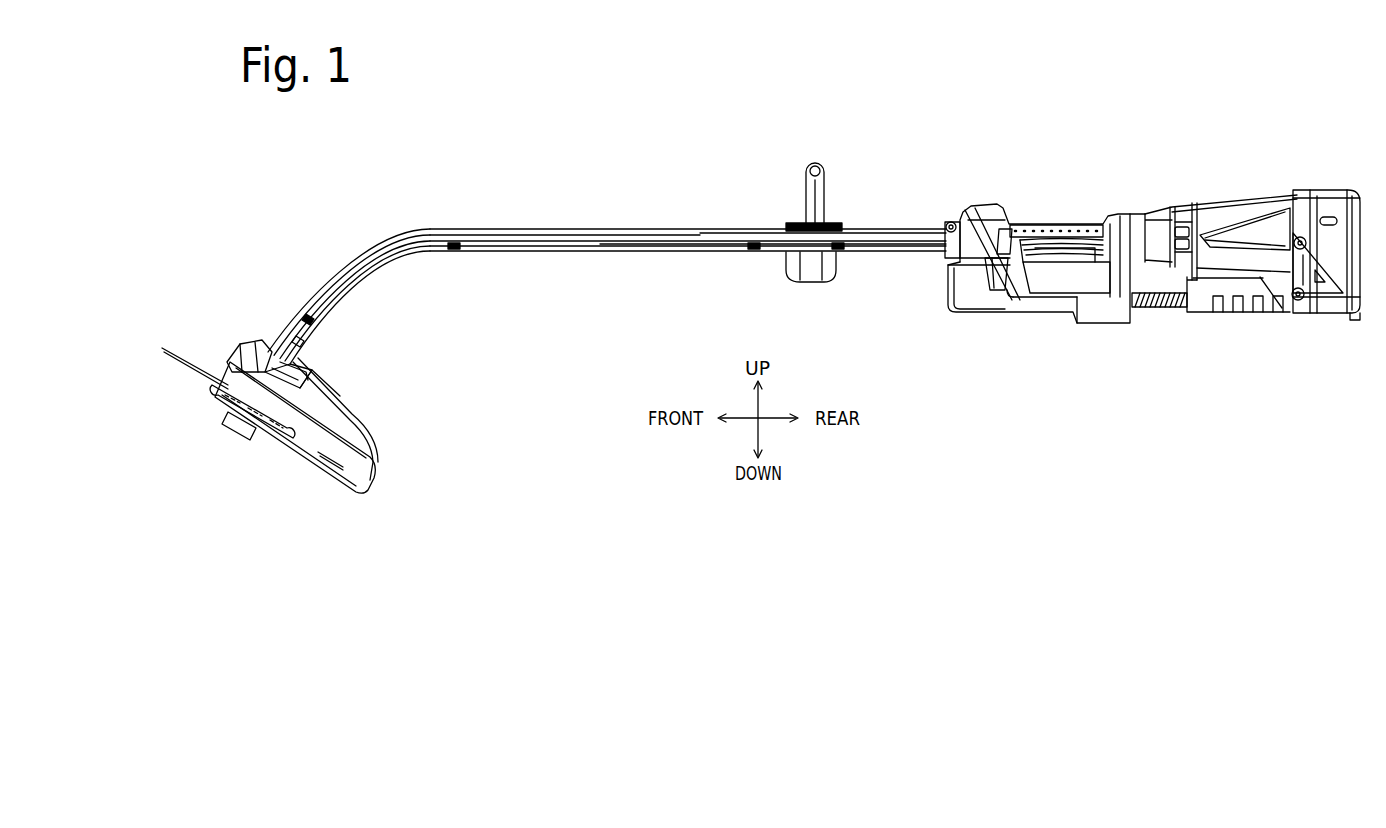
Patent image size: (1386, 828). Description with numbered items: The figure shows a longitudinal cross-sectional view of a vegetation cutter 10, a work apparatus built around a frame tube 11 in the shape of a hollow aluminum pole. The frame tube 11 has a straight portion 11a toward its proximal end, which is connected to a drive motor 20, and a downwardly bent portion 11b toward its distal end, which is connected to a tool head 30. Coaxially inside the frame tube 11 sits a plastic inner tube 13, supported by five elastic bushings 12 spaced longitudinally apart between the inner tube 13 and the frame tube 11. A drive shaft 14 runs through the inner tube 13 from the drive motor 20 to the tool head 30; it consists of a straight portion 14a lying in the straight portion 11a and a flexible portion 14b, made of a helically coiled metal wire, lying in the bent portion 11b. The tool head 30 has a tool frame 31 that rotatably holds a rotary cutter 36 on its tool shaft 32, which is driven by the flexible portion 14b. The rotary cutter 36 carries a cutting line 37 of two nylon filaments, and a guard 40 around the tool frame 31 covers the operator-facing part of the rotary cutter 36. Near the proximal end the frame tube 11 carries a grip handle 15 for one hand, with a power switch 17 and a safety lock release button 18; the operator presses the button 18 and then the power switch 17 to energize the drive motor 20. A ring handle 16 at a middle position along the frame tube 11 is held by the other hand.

The vegetation cutter 10 is at (963, 180).
The frame tube 11 is at (585, 228).
The straight portion 11a is at (728, 229).
The bent portion 11b is at (335, 273).
The bushings 12 is at (320, 320).
The inner tube 13 is at (418, 230).
The drive shaft 14 is at (618, 238).
The straight portion 14a is at (668, 238).
The flexible portion 14b is at (385, 245).
The grip handle 15 is at (1043, 230).
The ring handle 16 is at (823, 188).
The power switch 17 is at (1040, 260).
The safety lock release button 18 is at (997, 262).
The drive motor 20 is at (1225, 207).
The tool head 30 is at (243, 328).
The tool frame 31 is at (292, 373).
The tool shaft 32 is at (267, 367).
The rotary cutter 36 is at (217, 400).
The cutting line 37 is at (180, 367).
The guard 40 is at (330, 397).